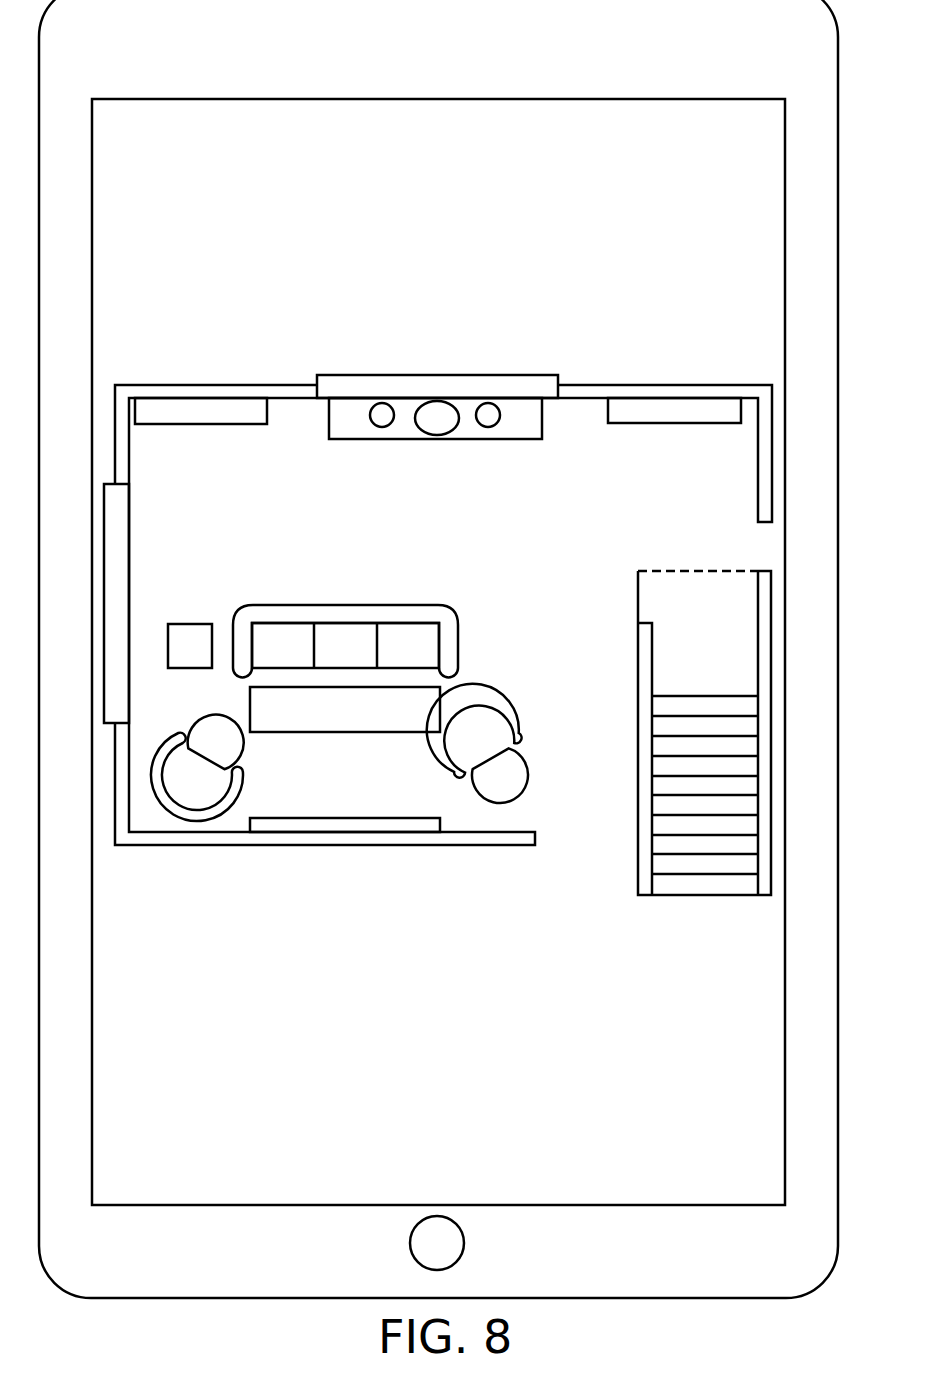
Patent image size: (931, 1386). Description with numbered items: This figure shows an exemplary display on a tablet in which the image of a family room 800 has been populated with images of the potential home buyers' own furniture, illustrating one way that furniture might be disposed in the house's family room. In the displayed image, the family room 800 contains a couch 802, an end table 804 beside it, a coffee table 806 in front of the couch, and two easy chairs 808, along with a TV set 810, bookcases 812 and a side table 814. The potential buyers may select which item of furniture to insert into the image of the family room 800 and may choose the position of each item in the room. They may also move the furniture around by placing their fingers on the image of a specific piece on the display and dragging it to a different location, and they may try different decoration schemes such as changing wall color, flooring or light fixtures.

The family room 800 is at (693, 313).
The couch 802 is at (458, 633).
The end table 804 is at (192, 622).
The coffee table 806 is at (432, 708).
The easy chairs 808 is at (165, 752).
The TV set 810 is at (340, 822).
The bookcases 812 is at (678, 408).
The side table 814 is at (468, 405).